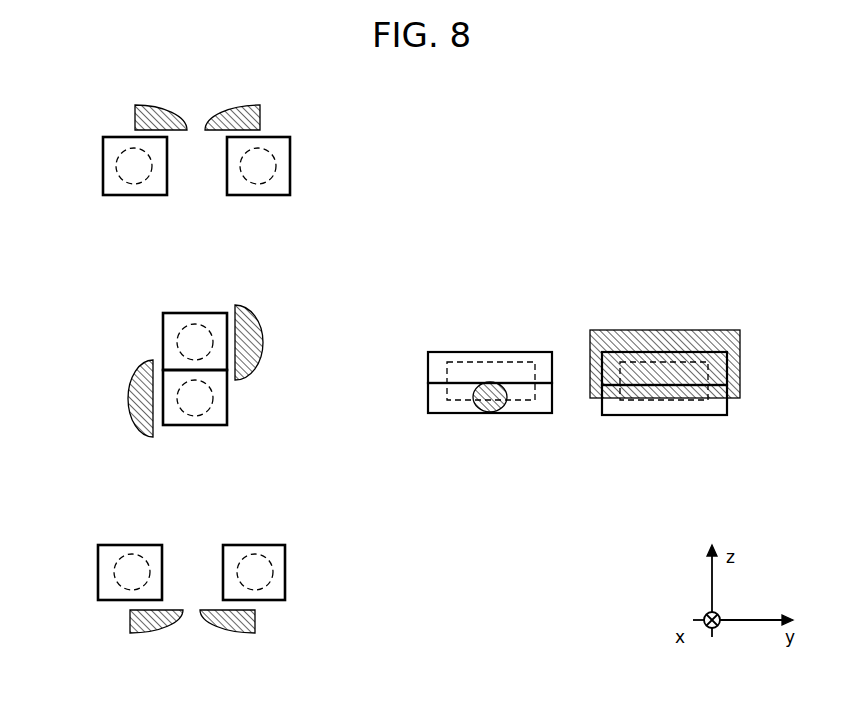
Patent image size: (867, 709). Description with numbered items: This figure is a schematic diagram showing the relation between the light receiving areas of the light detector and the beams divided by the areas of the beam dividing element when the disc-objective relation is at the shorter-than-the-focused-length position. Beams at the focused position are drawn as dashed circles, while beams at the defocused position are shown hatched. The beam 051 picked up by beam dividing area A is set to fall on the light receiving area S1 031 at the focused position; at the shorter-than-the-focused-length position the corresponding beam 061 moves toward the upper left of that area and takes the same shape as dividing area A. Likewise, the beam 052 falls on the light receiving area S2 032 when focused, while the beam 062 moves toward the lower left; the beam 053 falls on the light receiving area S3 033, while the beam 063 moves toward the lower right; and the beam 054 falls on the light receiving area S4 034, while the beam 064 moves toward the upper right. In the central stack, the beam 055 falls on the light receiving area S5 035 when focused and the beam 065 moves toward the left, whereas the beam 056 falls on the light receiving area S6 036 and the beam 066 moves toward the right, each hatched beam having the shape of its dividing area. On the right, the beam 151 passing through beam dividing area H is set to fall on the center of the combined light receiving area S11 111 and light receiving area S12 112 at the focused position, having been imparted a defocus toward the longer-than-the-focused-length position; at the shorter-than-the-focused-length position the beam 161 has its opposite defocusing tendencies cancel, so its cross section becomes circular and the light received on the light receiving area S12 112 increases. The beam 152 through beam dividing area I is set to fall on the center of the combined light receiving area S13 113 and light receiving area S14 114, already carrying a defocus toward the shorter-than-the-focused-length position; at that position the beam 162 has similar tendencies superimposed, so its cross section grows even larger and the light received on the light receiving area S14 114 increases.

The light receiving area S1 031 is at (257, 195).
The light receiving area S2 032 is at (257, 545).
The light receiving area S3 033 is at (130, 545).
The light receiving area S4 034 is at (133, 195).
The light receiving area S5 035 is at (195, 425).
The light receiving area S6 036 is at (195, 312).
The beam 051 is at (276, 166).
The beam 052 is at (273, 572).
The beam 053 is at (114, 572).
The beam 054 is at (116, 167).
The beam 055 is at (213, 400).
The beam 056 is at (177, 343).
The beam 061 is at (260, 118).
The beam 062 is at (255, 620).
The beam 063 is at (128, 621).
The beam 064 is at (135, 118).
The beam 065 is at (128, 398).
The beam 066 is at (263, 340).
The light receiving area S11 111 is at (495, 351).
The light receiving area S12 112 is at (530, 414).
The light receiving area S13 113 is at (703, 416).
The light receiving area S14 114 is at (672, 351).
The beam 151 is at (440, 369).
The beam 152 is at (708, 375).
The beam 161 is at (485, 414).
The beam 162 is at (720, 330).